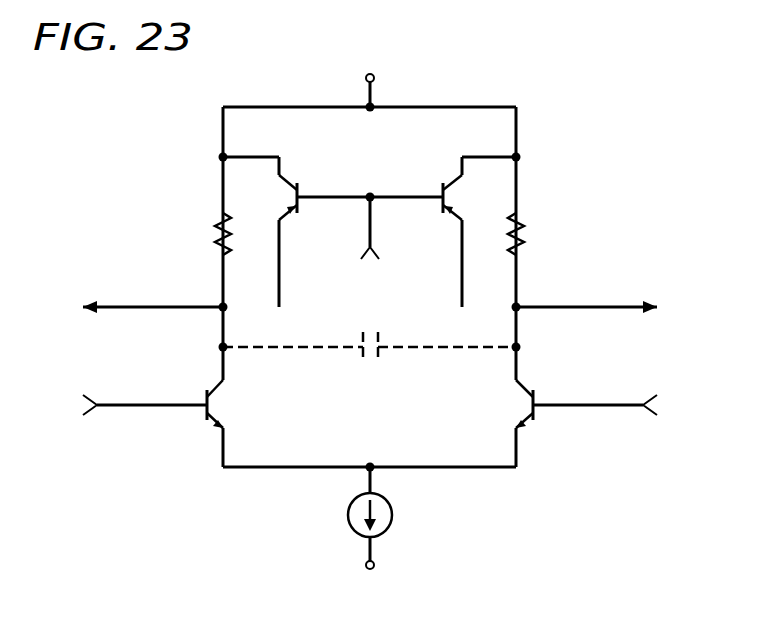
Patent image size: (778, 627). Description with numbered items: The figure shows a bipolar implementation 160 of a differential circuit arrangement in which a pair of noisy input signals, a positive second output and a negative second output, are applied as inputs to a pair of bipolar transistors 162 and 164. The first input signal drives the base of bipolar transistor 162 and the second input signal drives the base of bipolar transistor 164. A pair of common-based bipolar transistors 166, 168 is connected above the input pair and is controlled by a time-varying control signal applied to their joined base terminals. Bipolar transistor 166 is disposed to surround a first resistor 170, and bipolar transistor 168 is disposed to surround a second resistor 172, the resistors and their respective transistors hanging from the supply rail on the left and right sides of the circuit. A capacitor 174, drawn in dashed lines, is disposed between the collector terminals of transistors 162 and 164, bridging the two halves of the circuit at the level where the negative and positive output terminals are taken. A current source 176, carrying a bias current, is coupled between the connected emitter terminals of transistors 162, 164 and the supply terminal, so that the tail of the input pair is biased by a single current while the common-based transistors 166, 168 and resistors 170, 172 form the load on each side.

The differential amplifier circuit 160 is at (618, 160).
The bipolar transistor 162 is at (205, 395).
The bipolar transistor 164 is at (535, 416).
The common-based bipolar transistor 166 is at (298, 208).
The common-based bipolar transistor 168 is at (442, 188).
The first resistor 170 is at (216, 225).
The second resistor 172 is at (522, 220).
The capacitor 174 is at (362, 357).
The current source 176 is at (348, 510).